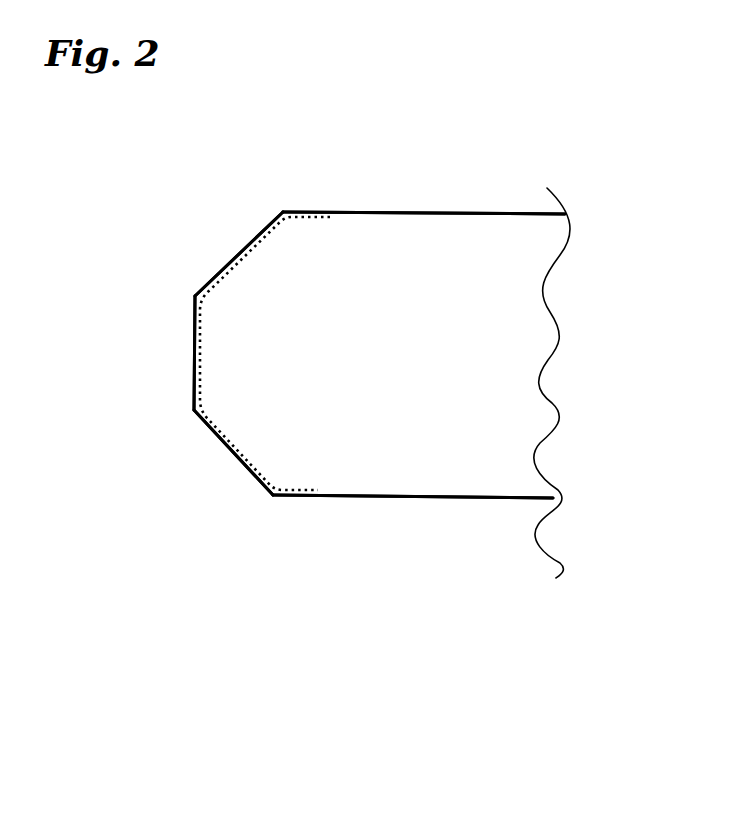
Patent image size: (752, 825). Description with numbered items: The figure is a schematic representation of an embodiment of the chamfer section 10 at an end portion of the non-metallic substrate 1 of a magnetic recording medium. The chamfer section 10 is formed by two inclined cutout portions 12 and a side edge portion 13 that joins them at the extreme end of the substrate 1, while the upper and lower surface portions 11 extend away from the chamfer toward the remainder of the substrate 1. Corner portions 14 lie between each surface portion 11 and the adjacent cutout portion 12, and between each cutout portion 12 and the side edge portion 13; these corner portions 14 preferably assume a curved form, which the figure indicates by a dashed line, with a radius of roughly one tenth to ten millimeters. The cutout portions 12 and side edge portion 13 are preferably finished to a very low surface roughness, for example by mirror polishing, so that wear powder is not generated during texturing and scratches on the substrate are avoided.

The non-metallic substrate 1 is at (413, 307).
The chamfer section 10 is at (342, 690).
The surface portion 11 is at (387, 205).
The cutout portion 12 is at (218, 265).
The side edge portion 13 is at (185, 370).
The corner portion 14 is at (270, 210).